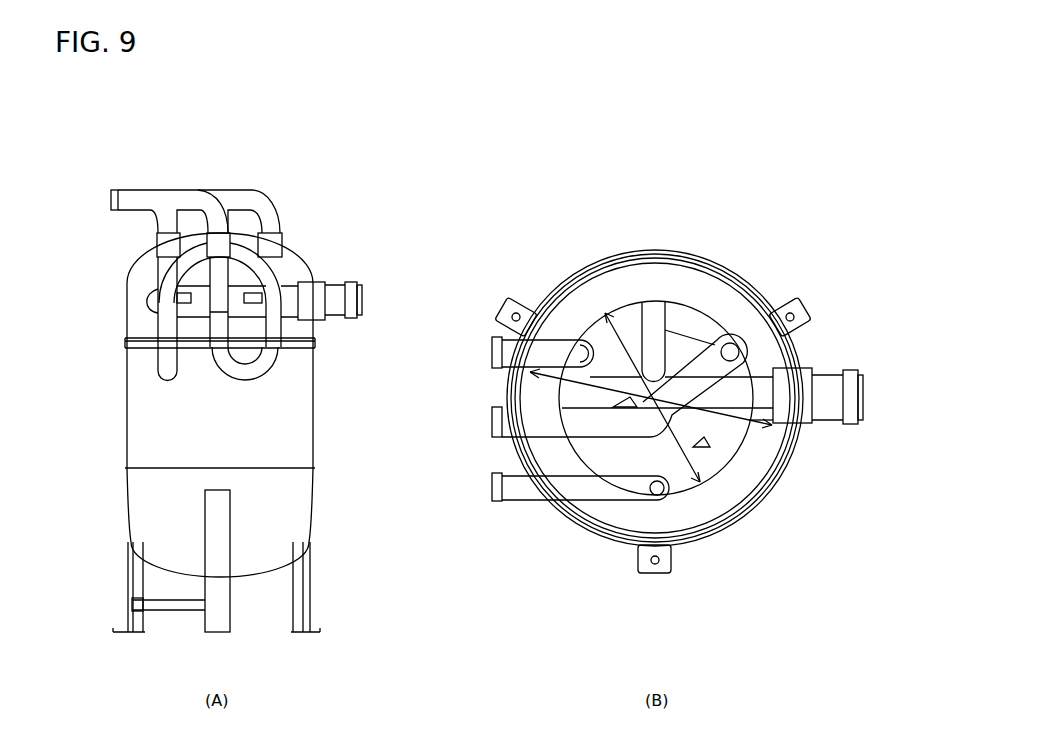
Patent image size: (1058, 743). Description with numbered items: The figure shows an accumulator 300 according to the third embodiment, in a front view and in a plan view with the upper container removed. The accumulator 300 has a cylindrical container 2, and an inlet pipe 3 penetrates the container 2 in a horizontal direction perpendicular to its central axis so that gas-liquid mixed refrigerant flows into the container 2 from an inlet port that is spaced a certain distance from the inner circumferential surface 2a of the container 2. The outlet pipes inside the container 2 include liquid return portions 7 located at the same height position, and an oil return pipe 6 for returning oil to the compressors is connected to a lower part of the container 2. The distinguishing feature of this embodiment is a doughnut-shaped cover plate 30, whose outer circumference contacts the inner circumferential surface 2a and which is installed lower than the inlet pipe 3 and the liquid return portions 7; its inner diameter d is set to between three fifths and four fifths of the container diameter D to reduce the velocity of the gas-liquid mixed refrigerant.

The accumulator 300 is at (362, 177).
The container 2 is at (313, 405).
The inner circumferential surface 2a is at (748, 490).
The inlet pipe 3 is at (327, 284).
The cover plate 30 is at (313, 339).
The liquid return portions 7 is at (250, 288).
The oil return pipe 6 is at (160, 604).